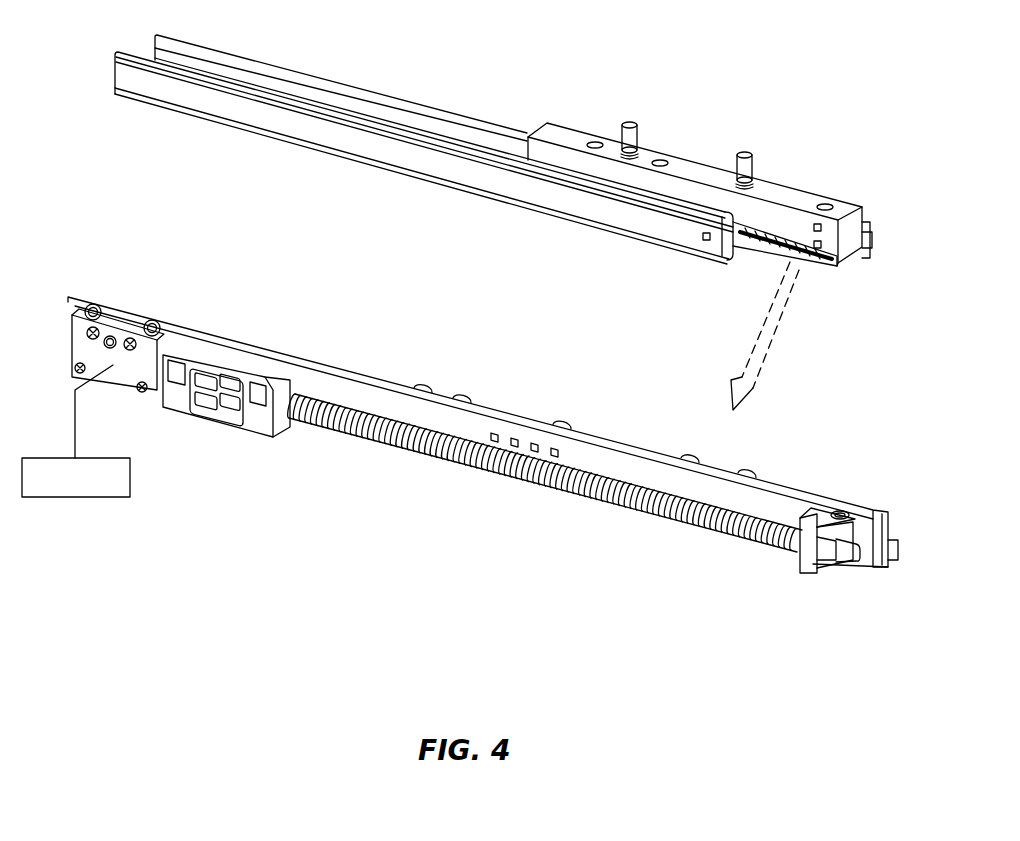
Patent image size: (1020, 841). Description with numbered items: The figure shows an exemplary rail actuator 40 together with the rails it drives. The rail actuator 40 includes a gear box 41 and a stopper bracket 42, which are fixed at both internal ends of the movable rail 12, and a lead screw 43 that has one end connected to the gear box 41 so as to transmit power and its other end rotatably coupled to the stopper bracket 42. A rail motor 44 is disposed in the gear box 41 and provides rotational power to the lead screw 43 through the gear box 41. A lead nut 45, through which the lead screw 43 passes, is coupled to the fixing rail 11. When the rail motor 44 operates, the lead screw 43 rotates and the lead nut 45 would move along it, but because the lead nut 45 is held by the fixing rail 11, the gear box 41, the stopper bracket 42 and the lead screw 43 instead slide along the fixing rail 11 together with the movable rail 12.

The fixing rail 11 is at (375, 152).
The movable rail 12 is at (565, 131).
The rail actuator 40 is at (388, 458).
The gear box 41 is at (120, 302).
The stopper bracket 42 is at (803, 562).
The lead screw 43 is at (592, 498).
The rail motor 44 is at (130, 478).
The lead nut 45 is at (236, 364).